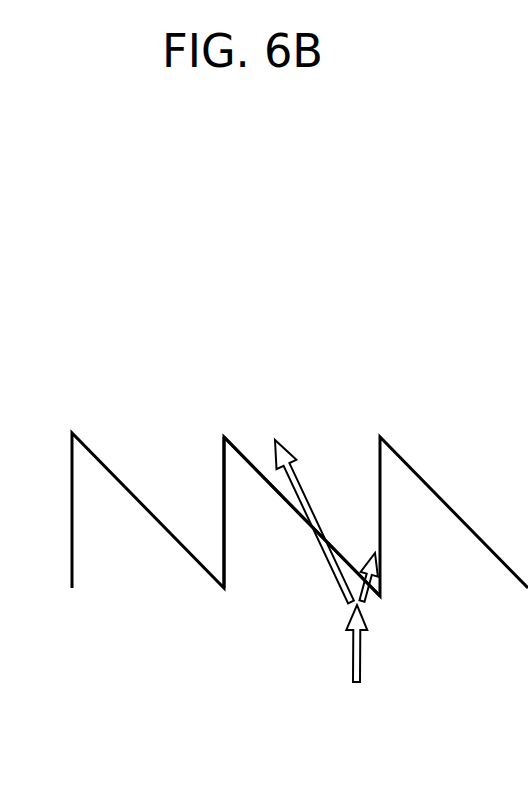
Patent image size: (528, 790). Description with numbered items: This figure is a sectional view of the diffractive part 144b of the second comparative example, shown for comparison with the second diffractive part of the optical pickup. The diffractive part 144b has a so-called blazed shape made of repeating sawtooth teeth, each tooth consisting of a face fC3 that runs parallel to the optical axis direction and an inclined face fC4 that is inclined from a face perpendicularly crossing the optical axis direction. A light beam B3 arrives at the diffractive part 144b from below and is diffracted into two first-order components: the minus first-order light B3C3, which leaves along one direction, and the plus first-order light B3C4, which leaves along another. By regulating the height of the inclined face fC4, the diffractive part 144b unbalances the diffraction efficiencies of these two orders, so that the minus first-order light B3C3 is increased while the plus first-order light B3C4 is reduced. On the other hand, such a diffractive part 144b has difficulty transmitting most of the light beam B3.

The diffractive part 144b is at (300, 395).
The face parallel to the optical axis direction fC3 is at (223, 478).
The inclined face fC4 is at (246, 448).
The light beam B3 is at (360, 653).
The −first-order light B3C3 is at (298, 469).
The +first-order light B3C4 is at (378, 572).